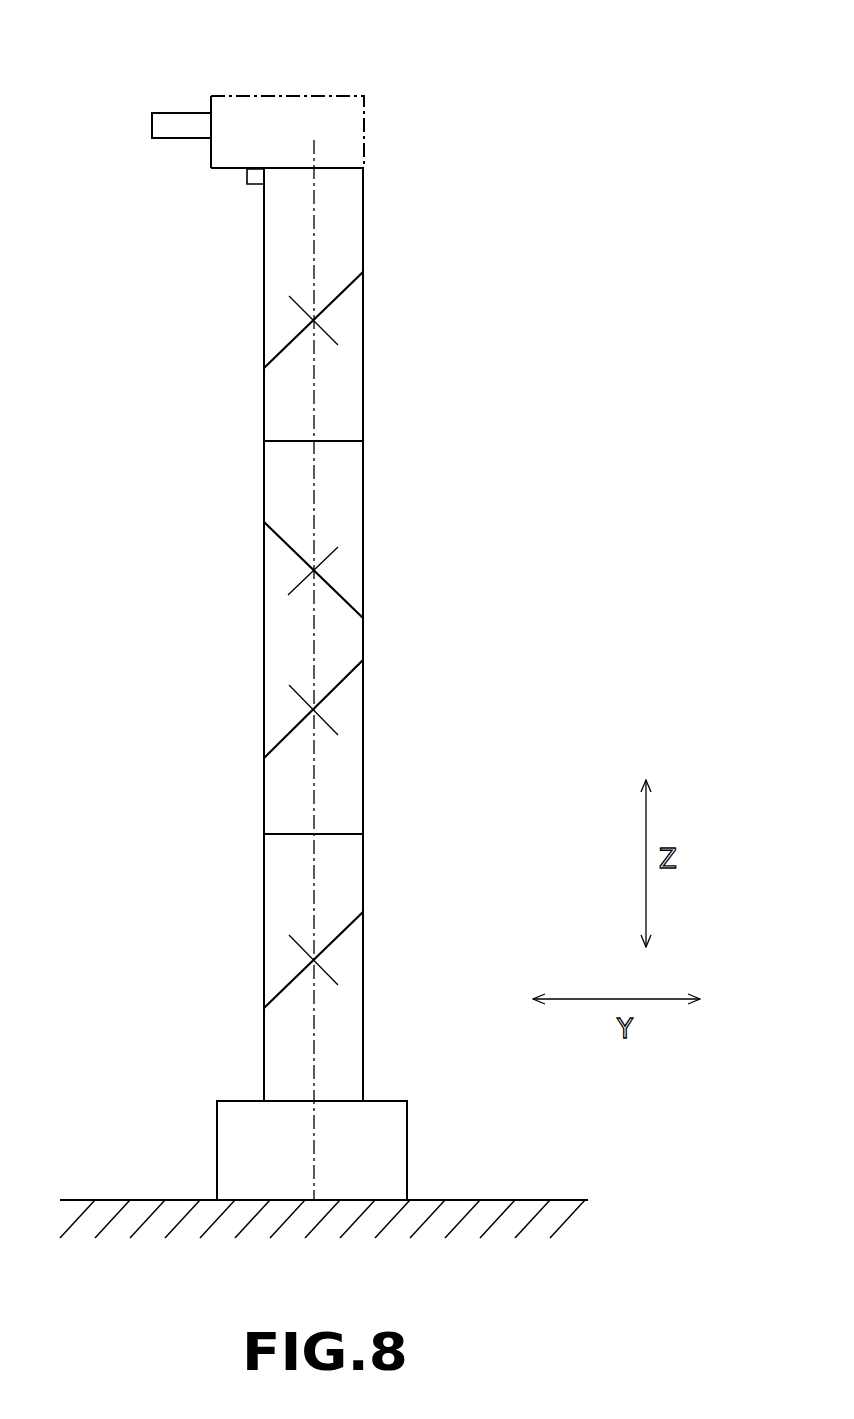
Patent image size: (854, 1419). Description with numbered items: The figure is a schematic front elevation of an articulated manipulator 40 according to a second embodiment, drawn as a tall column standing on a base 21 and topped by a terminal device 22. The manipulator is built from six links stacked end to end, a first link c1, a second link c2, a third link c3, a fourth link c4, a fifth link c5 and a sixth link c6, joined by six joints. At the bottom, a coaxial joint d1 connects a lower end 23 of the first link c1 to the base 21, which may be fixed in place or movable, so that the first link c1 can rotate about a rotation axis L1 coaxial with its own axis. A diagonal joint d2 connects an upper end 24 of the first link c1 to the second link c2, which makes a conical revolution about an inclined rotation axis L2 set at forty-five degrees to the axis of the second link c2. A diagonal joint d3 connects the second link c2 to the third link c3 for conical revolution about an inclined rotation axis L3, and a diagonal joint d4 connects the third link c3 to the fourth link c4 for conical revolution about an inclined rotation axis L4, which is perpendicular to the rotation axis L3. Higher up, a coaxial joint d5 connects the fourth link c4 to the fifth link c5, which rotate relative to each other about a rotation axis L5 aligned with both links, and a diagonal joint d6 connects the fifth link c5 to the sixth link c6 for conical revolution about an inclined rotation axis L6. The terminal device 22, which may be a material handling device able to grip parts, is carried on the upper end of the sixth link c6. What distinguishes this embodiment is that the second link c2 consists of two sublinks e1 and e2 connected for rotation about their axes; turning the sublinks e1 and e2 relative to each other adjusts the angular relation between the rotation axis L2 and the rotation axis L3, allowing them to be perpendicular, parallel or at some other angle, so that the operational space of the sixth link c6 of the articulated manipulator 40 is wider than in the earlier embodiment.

The base 21 is at (392, 1158).
The terminal device 22 is at (317, 97).
The lower end 23 is at (352, 1066).
The upper end 24 is at (352, 937).
The articulated manipulator 40 is at (472, 167).
The first link c1 is at (352, 1022).
The second link c2 is at (448, 758).
The third link c3 is at (350, 645).
The fourth link c4 is at (350, 501).
The fifth link c5 is at (352, 363).
The sixth link c6 is at (348, 220).
The sublink e1 is at (348, 784).
The sublink e2 is at (348, 851).
The coaxial joint d1 is at (288, 1081).
The diagonal joint d2 is at (295, 957).
The diagonal joint d3 is at (297, 712).
The diagonal joint d4 is at (290, 566).
The coaxial joint d5 is at (298, 425).
The diagonal joint d6 is at (289, 325).
The rotation axis L1 is at (314, 1134).
The inclined rotation axis L2 is at (325, 972).
The inclined rotation axis L3 is at (327, 722).
The inclined rotation axis L4 is at (327, 557).
The rotation axis L5 is at (314, 412).
The inclined rotation axis L6 is at (328, 332).